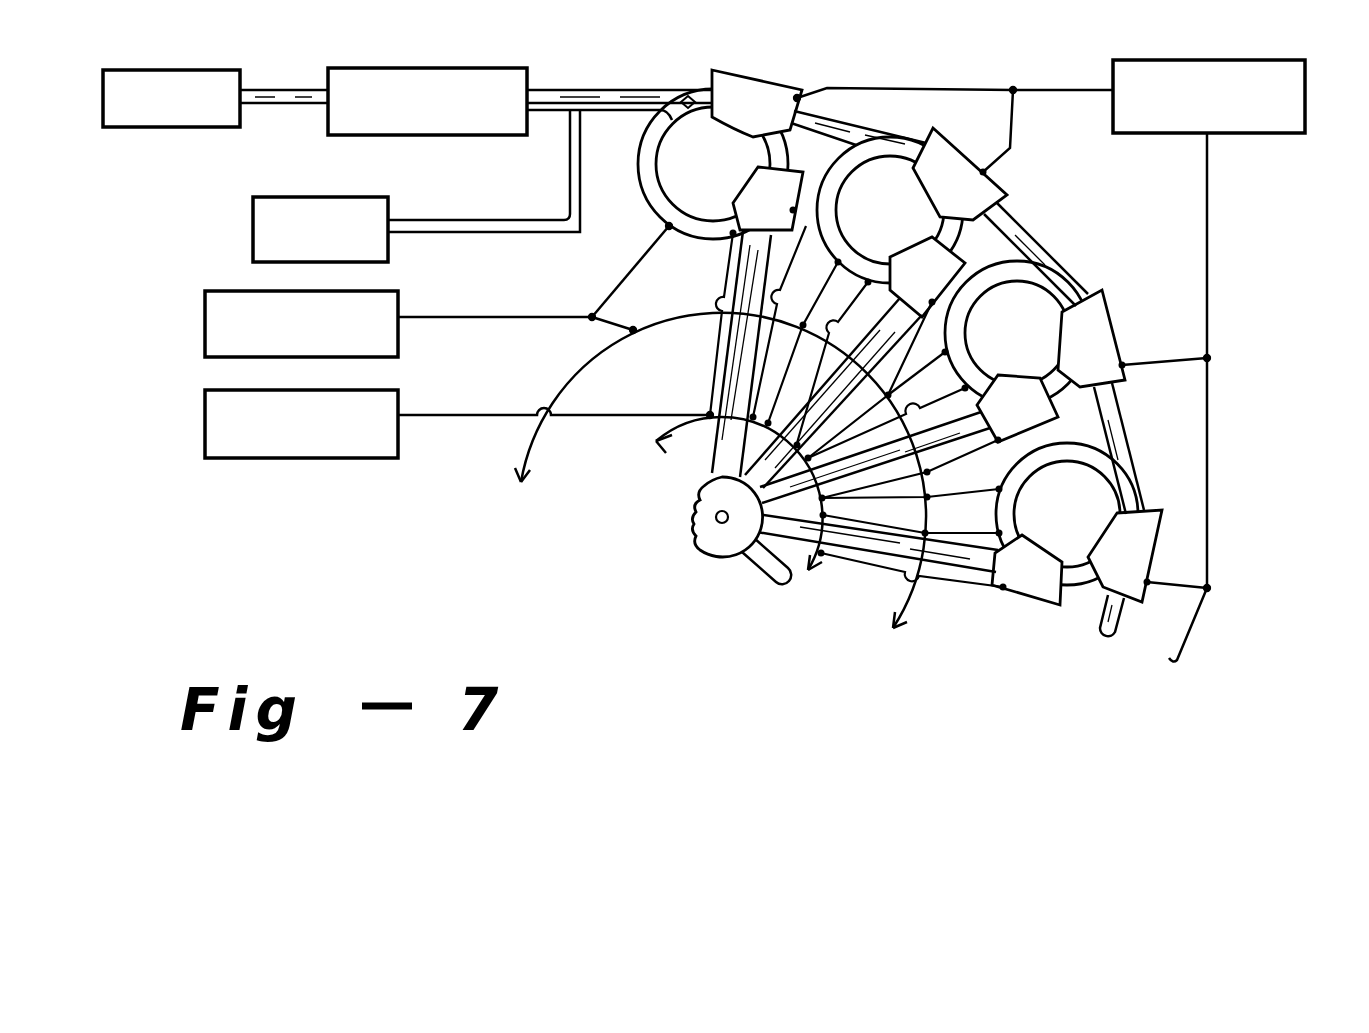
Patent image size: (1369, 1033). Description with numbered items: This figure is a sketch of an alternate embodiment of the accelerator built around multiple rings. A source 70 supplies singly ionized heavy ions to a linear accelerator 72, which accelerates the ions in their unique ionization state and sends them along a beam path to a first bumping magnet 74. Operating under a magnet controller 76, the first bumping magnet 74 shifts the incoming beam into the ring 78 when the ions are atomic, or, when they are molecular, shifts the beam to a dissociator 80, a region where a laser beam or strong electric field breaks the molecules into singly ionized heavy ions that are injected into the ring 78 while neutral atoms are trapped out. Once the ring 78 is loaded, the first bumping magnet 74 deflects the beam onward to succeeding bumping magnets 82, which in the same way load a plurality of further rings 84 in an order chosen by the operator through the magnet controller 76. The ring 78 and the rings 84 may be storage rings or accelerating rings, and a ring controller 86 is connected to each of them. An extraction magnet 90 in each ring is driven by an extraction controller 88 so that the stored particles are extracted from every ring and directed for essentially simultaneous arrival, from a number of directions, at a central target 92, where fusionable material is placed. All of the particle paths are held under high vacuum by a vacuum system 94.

The source 70 is at (193, 80).
The linear accelerator 72 is at (428, 78).
The first bumping magnet 74 is at (750, 90).
The magnet controller 76 is at (1242, 70).
The ring 78 is at (660, 156).
The dissociator 80 is at (684, 98).
The bumping magnets 82 is at (972, 152).
The rings 84 is at (838, 198).
The ring controller 86 is at (205, 305).
The extraction controller 88 is at (205, 400).
The extraction magnet 90 is at (750, 195).
The target 92 is at (700, 513).
The vacuum system 94 is at (255, 212).